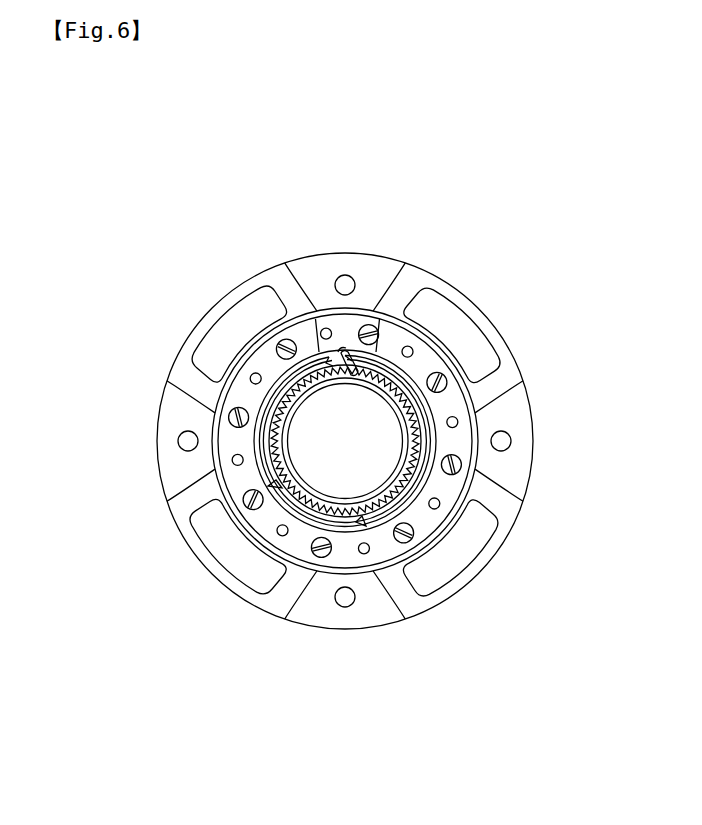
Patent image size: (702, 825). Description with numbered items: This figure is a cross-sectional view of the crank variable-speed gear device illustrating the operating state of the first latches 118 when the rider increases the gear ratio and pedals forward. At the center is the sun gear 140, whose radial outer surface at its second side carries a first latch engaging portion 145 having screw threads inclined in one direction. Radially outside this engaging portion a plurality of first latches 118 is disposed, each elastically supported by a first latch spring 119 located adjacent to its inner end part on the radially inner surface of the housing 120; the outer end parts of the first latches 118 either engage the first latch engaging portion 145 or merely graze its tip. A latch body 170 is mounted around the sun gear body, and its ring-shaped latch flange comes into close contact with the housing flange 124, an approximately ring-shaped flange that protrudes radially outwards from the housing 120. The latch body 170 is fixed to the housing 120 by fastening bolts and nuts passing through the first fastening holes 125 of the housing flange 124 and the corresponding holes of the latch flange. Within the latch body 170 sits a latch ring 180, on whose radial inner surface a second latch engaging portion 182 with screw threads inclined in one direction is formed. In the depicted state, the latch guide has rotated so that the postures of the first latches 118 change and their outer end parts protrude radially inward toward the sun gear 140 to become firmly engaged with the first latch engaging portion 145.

The housing 120 is at (292, 259).
The first fastening holes 125 is at (342, 287).
The housing flange 124 is at (317, 621).
The latch body 170 is at (421, 518).
The first latch engaging portion 145 is at (351, 526).
The latch ring 180 is at (291, 505).
The second latch engaging portion 182 is at (270, 462).
The sun gear 140 is at (285, 407).
The first latches 118 is at (351, 356).
The first latch springs 119 is at (370, 372).